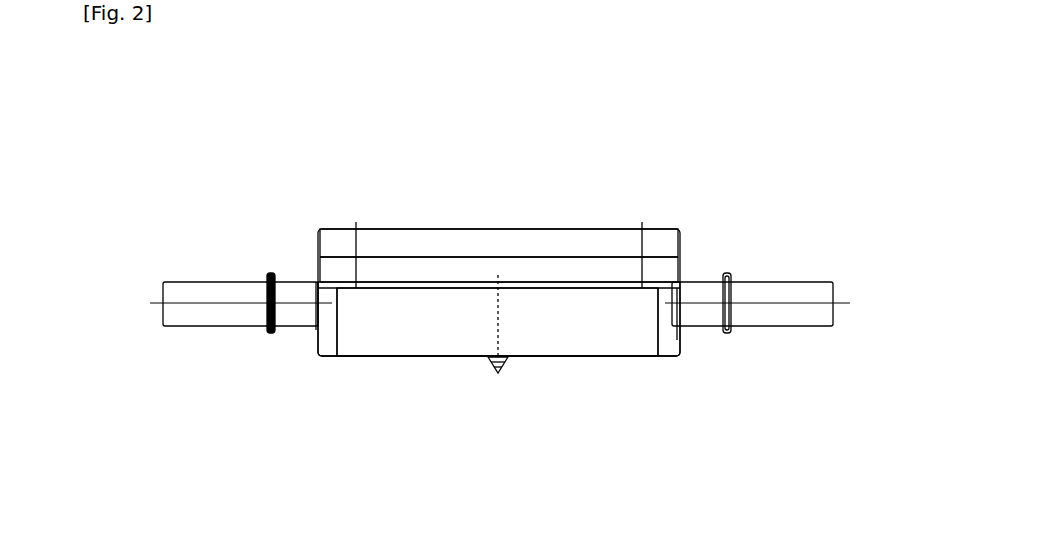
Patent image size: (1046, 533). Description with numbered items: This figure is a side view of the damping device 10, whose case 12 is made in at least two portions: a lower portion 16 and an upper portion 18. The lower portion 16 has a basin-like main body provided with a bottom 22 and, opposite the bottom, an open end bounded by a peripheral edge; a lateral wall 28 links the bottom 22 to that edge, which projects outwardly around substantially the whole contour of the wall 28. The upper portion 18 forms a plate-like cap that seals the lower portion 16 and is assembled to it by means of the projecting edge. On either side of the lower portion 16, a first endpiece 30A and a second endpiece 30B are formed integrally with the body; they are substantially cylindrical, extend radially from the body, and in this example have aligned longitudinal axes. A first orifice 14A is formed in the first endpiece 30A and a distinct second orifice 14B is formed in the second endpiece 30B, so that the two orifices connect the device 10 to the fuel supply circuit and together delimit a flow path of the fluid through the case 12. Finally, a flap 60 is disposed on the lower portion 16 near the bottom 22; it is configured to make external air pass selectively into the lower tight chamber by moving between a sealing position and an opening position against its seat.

The device 10 is at (362, 186).
The case 12 is at (603, 232).
The first orifice 14A is at (313, 326).
The second orifice 14B is at (677, 338).
The lower portion 16 is at (603, 325).
The upper portion 18 is at (650, 243).
The bottom 22 is at (385, 358).
The lateral wall 28 is at (323, 257).
The first endpiece 30A is at (200, 315).
The second endpiece 30B is at (788, 290).
The flap 60 is at (498, 373).